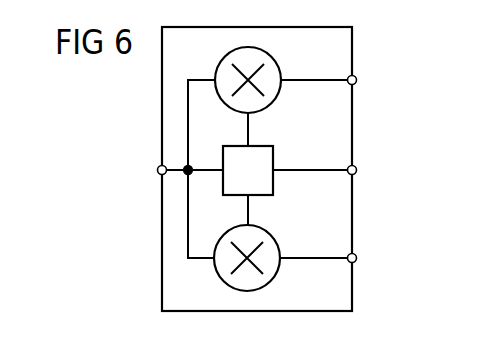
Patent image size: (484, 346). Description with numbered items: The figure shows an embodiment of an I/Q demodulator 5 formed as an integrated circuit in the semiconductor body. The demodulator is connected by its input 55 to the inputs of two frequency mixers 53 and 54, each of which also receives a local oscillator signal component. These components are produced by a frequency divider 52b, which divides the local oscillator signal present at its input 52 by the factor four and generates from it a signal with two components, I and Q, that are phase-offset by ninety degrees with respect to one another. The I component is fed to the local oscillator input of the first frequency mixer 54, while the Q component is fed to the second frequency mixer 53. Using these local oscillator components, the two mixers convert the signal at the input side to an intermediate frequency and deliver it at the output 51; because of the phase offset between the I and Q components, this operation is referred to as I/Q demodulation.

The quadrature mixer arrangement 5 is at (162, 262).
The output 51 is at (357, 80).
The input 52 is at (357, 170).
The frequency divider (divide by 4) 52b is at (273, 182).
The second frequency mixer 53 is at (276, 272).
The first frequency mixer 54 is at (279, 96).
The input 55 is at (158, 171).